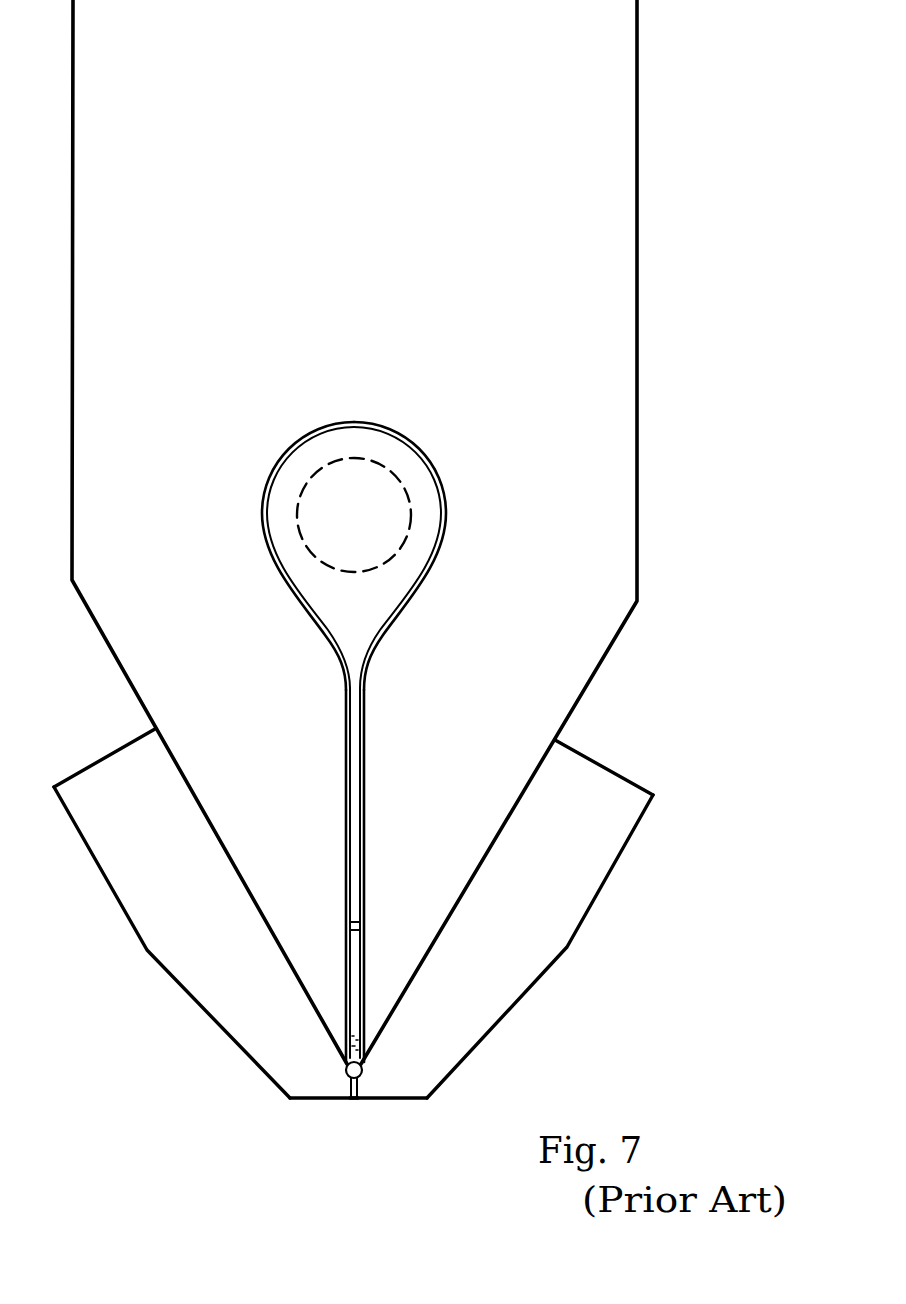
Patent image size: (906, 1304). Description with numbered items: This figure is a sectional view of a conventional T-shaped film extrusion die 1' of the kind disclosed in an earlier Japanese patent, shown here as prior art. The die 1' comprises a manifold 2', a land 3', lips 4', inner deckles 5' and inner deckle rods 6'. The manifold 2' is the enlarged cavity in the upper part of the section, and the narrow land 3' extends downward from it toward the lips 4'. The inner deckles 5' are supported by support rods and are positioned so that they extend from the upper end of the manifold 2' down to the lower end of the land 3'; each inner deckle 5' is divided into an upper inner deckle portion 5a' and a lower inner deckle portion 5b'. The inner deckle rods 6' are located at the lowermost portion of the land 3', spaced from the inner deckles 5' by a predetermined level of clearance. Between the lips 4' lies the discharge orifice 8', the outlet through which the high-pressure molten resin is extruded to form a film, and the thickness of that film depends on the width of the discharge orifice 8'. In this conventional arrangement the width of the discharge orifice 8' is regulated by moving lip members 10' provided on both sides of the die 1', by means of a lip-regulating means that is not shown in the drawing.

The T-shaped film extrusion die 1' is at (429, 549).
The manifold 2' is at (402, 556).
The land 3' is at (429, 875).
The lips 4' is at (423, 1125).
The inner deckles 5' is at (268, 820).
The upper inner deckle portion 5a' is at (285, 710).
The lower inner deckle portion 5b' is at (286, 885).
The inner deckle rods 6' is at (292, 1122).
The discharge orifice 8' is at (361, 1158).
The lip members 10' is at (364, 913).